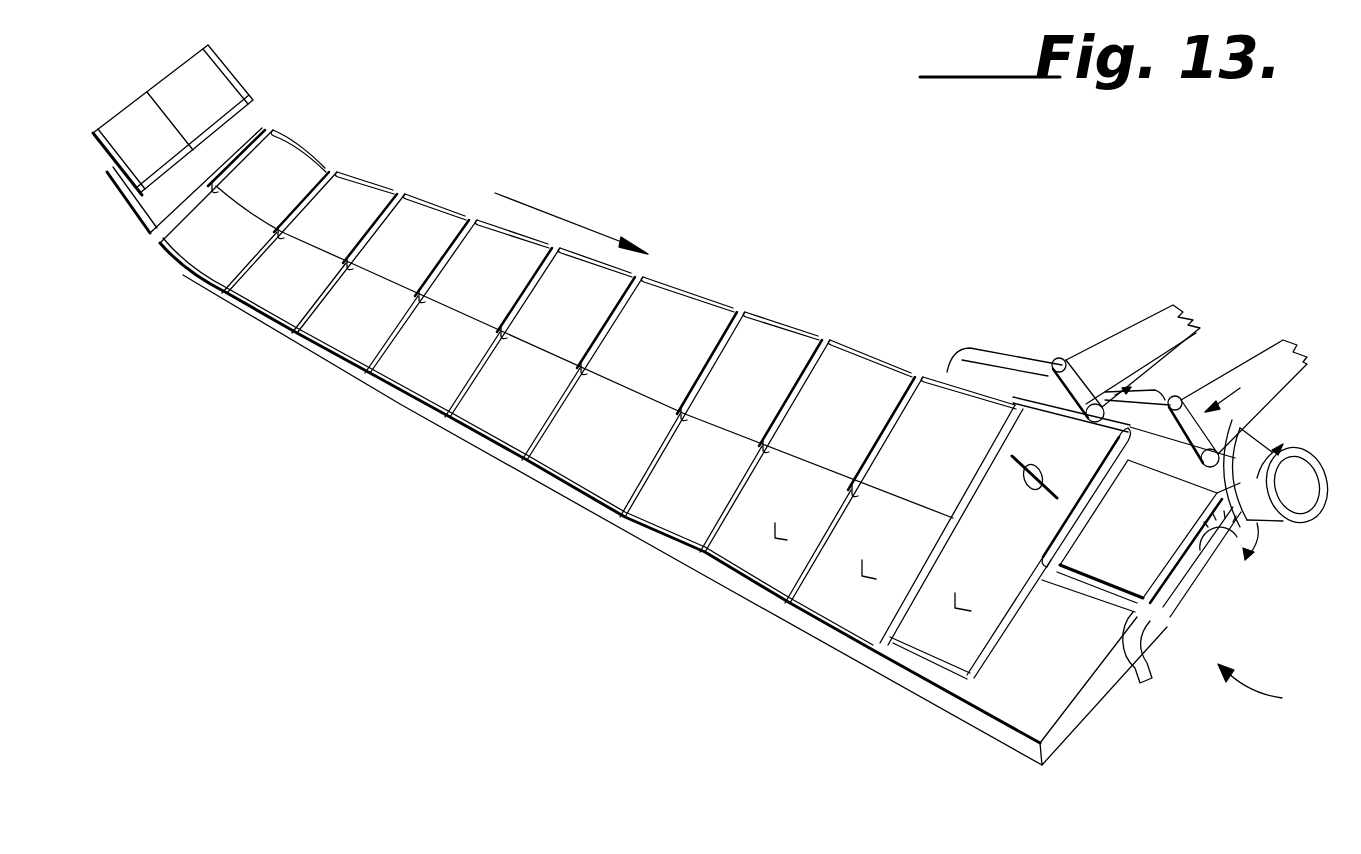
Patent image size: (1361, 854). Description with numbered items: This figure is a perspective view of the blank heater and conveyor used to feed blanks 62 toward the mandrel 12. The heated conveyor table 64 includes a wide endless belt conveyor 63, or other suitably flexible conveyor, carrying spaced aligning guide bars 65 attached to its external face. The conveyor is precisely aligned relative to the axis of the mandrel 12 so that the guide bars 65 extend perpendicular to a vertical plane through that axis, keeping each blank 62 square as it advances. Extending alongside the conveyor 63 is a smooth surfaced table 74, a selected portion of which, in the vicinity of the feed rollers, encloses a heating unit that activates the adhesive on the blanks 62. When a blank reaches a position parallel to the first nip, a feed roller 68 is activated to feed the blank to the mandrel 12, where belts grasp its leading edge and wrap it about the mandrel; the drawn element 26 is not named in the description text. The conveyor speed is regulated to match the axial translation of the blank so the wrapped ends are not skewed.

The mandrel 12 is at (1289, 446).
The belt strip with rollers 26 is at (1135, 332).
The blank 62 is at (1036, 410).
The endless belt conveyor 63 is at (1145, 633).
The heated conveyor table 64 is at (1273, 696).
The aligning guide bars 65 is at (828, 341).
The roller 68 is at (1032, 488).
The smooth surfaced table 74 is at (1005, 710).